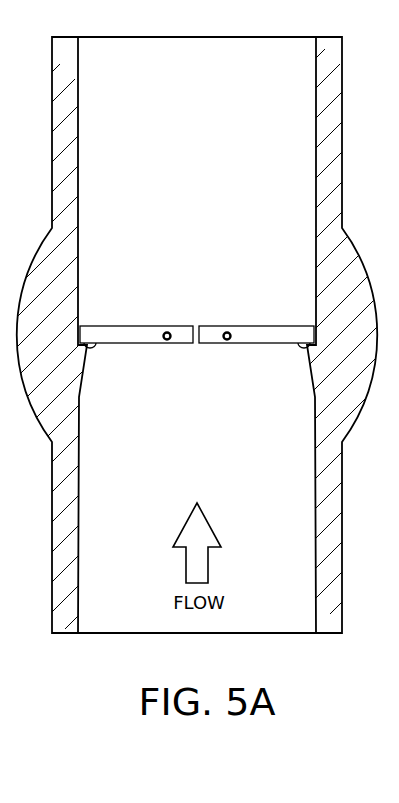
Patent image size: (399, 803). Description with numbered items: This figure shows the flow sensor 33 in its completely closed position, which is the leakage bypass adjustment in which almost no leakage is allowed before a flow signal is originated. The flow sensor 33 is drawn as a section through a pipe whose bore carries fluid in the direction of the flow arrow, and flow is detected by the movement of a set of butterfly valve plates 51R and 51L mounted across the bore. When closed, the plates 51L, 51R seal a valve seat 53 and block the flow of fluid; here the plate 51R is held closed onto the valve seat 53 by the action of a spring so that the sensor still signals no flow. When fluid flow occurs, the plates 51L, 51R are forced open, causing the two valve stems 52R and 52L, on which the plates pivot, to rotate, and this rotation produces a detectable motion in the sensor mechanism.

The flow sensor 33 is at (347, 238).
The left butterfly valve plate 51L is at (115, 326).
The right butterfly valve plate 51R is at (279, 326).
The left valve stem 52L is at (166, 342).
The right valve stem 52R is at (227, 342).
The valve seat 53 is at (92, 347).